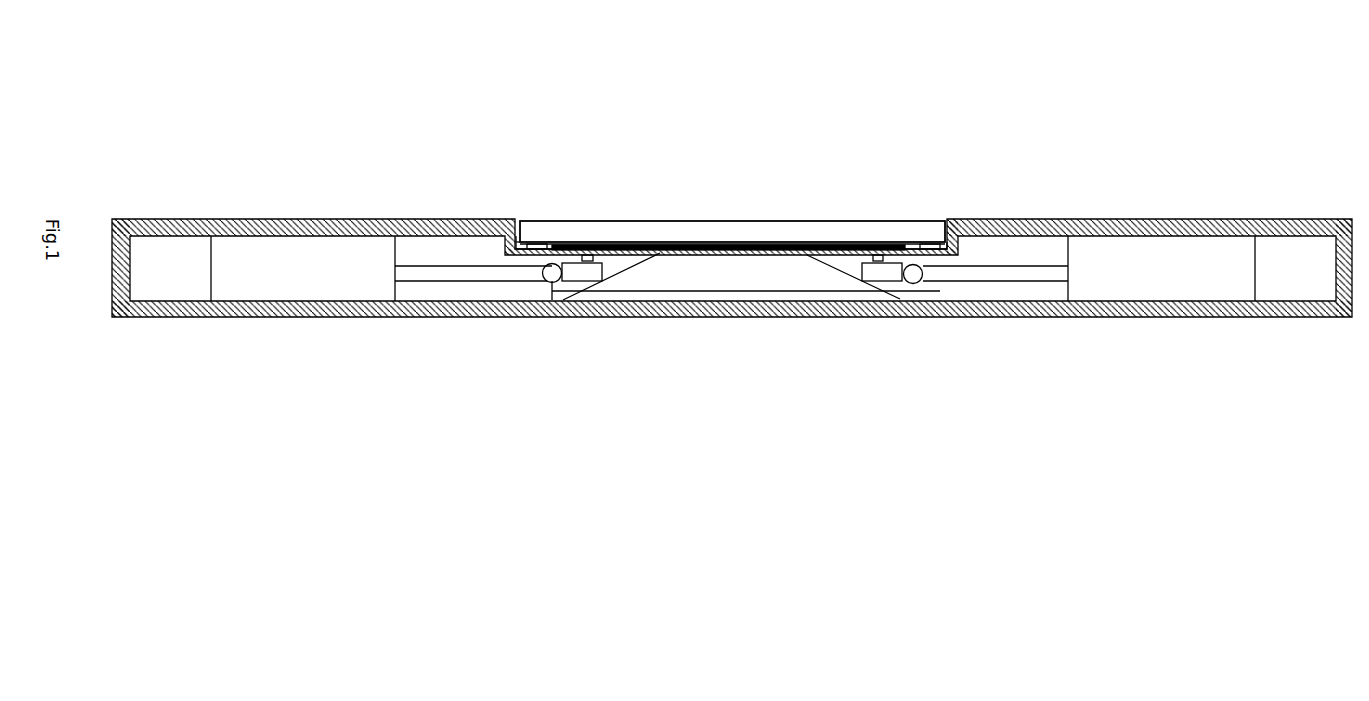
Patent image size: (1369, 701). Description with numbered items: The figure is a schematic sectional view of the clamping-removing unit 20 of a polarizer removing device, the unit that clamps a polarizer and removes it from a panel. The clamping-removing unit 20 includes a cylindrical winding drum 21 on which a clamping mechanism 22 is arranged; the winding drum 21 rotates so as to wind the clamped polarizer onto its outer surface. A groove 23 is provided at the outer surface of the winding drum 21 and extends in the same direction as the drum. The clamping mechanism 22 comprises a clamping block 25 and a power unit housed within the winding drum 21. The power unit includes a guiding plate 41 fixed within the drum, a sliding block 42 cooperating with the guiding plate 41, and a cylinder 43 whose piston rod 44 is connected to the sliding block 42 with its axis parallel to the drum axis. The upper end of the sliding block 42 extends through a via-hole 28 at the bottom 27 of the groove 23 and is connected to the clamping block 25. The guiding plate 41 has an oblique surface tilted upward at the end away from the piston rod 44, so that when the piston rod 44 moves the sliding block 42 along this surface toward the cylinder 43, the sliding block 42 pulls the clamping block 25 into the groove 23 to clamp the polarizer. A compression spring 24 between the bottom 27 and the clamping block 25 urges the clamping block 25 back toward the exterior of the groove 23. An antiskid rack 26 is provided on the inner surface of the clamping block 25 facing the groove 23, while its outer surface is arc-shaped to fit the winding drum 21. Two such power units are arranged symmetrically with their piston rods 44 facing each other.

The clamping-removing unit 20 is at (198, 164).
The winding drum 21 is at (378, 220).
The clamping mechanism 22 is at (548, 196).
The groove 23 is at (513, 228).
The compression spring 24 is at (937, 238).
The clamping block 25 is at (688, 228).
The antiskid rack 26 is at (822, 244).
The bottom of the groove 27 is at (740, 243).
The via-hole 28 is at (886, 250).
The guiding plate 41 is at (623, 263).
The sliding block 42 is at (573, 278).
The cylinder 43 is at (305, 258).
The piston rod 44 is at (465, 272).